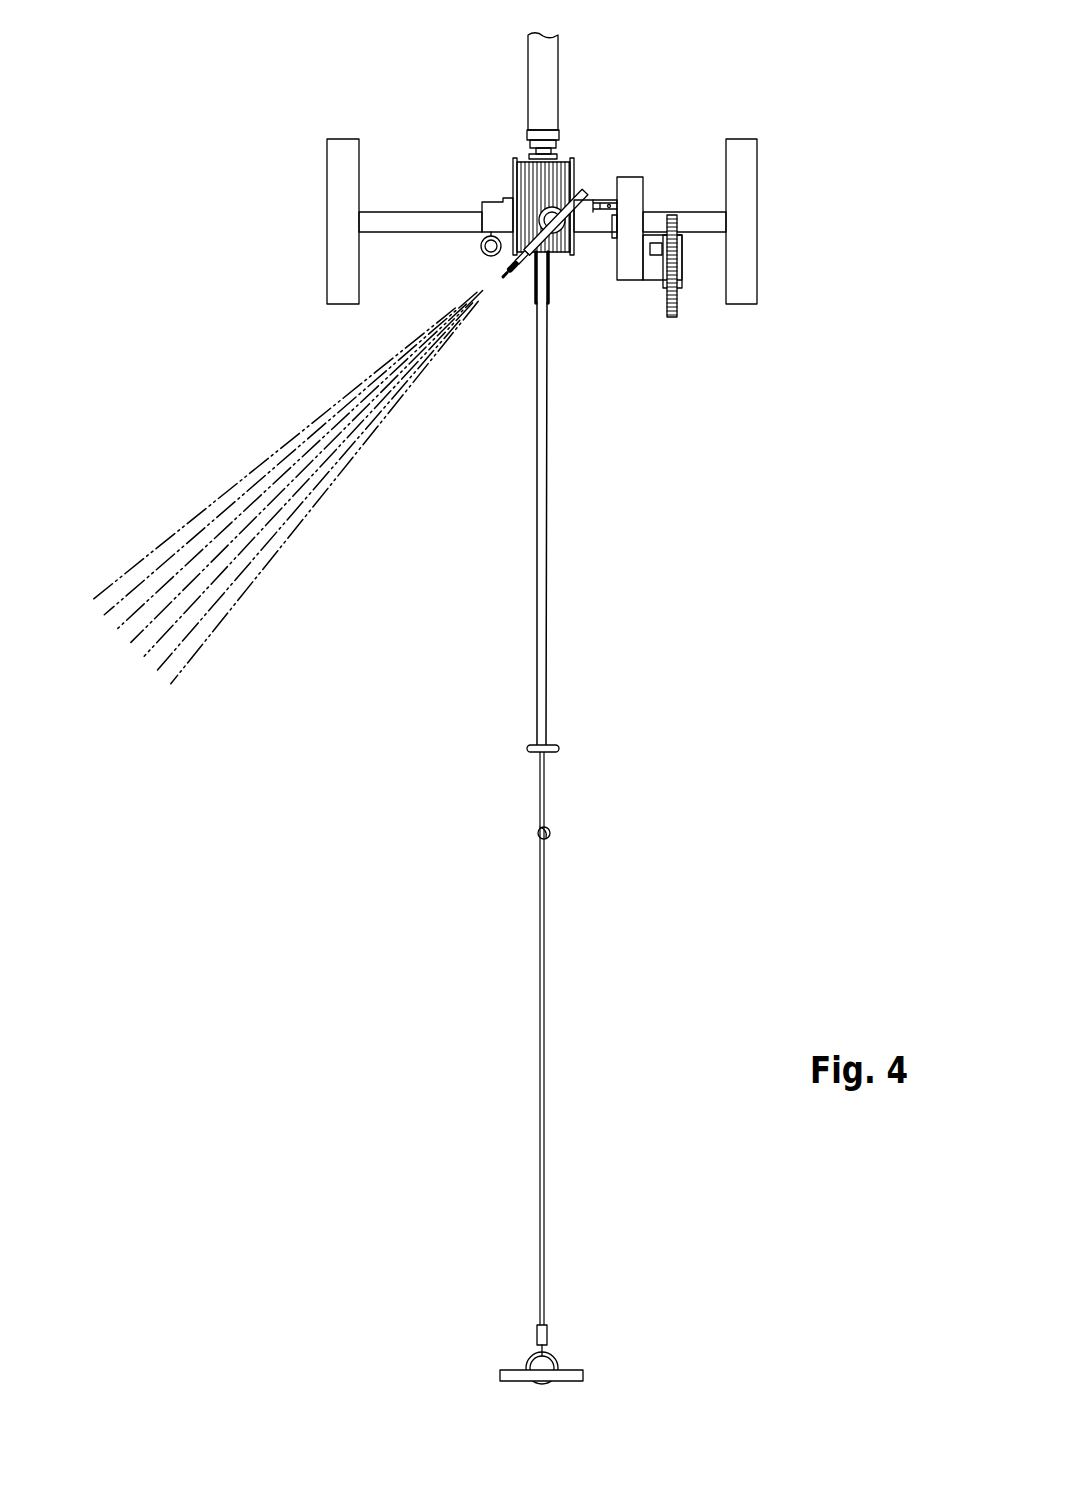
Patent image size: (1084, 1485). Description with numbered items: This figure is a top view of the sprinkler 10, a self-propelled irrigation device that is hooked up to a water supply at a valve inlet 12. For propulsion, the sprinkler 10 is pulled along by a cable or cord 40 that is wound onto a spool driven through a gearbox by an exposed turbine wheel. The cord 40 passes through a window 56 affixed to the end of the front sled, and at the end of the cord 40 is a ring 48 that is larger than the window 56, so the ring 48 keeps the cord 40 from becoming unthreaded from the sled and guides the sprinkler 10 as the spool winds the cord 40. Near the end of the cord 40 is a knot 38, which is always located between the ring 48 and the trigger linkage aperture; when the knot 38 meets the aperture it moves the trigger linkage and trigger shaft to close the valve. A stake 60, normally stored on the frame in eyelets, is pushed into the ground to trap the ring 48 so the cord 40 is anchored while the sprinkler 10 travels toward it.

The sprinkler 10 is at (807, 112).
The valve inlet 12 is at (527, 130).
The knot 38 is at (533, 832).
The cord 40 is at (545, 1136).
The ring 48 is at (557, 1357).
The window 56 is at (559, 748).
The stake 60 is at (500, 1375).